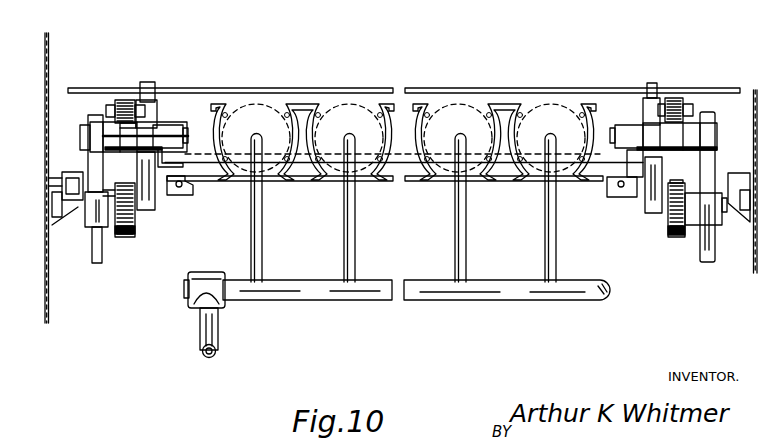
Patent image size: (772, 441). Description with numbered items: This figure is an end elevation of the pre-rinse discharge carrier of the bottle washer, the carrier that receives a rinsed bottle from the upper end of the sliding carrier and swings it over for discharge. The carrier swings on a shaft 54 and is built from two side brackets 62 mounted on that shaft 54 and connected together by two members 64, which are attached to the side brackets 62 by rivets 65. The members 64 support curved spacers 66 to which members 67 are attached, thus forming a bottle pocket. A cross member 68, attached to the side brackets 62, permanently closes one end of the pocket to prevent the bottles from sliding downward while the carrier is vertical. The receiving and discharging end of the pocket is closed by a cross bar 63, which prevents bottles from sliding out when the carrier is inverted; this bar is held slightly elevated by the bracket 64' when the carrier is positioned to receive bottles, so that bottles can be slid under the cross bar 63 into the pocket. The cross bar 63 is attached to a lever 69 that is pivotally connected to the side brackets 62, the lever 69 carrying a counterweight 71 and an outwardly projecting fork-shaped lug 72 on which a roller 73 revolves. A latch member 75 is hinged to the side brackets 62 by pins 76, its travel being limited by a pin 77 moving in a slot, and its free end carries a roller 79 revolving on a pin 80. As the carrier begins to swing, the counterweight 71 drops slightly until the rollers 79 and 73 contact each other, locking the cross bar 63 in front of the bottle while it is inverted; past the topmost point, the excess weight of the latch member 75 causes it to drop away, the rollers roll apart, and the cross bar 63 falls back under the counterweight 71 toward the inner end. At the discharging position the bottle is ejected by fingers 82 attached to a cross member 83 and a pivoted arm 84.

The shaft 54 is at (190, 126).
The side brackets 62 is at (168, 126).
The cross bar 63 is at (582, 88).
The members 64 is at (404, 192).
The bracket 64' is at (387, 197).
The rivets 65 is at (180, 196).
The curved spacers 66 is at (416, 104).
The members 67 is at (467, 103).
The cross member 68 is at (535, 157).
The lever 69 is at (157, 125).
The counterweight 71 is at (148, 211).
The fork-shaped lug 72 is at (114, 104).
The roller 73 is at (123, 100).
The latch member 75 is at (101, 263).
The pins 76 is at (80, 137).
The pin 77 is at (88, 168).
The roller 79 is at (126, 238).
The pin 80 is at (77, 212).
The fingers 82 is at (263, 262).
The cross member 83 is at (377, 300).
The arm 84 is at (219, 338).